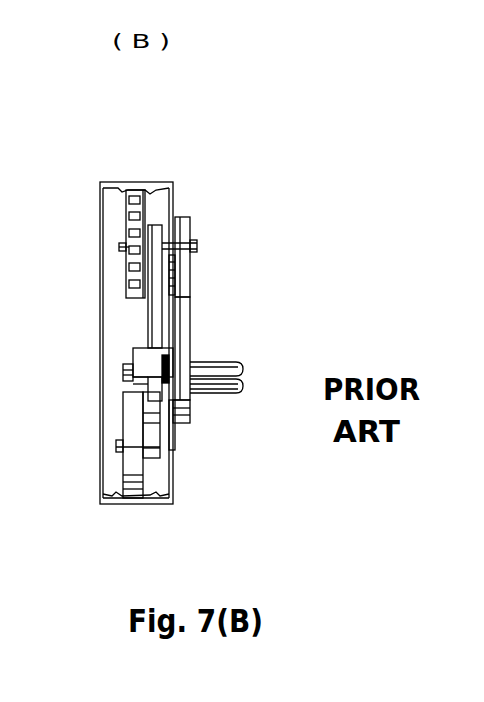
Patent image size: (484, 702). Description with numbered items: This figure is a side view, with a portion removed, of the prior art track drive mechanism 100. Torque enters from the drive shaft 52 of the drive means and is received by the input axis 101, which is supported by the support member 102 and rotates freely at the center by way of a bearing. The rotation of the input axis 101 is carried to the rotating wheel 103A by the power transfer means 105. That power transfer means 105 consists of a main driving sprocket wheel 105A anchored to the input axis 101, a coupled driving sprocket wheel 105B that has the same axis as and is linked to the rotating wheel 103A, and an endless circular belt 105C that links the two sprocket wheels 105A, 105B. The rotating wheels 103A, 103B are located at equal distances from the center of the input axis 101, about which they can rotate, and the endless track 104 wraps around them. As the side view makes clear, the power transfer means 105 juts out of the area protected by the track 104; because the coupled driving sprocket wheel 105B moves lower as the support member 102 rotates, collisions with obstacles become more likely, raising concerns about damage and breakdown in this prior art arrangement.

The track drive mechanism 100 is at (210, 147).
The input axis 101 is at (122, 377).
The support member 102 is at (152, 313).
The rotating wheel 103A is at (127, 225).
The rotating wheel 103B is at (128, 462).
The endless track 104 is at (155, 178).
The power transfer means 105 is at (288, 317).
The main driving sprocket wheel 105A is at (190, 343).
The coupled driving sprocket wheel 105B is at (193, 229).
The endless circular belt 105C is at (190, 287).
The drive shaft 52 is at (222, 397).